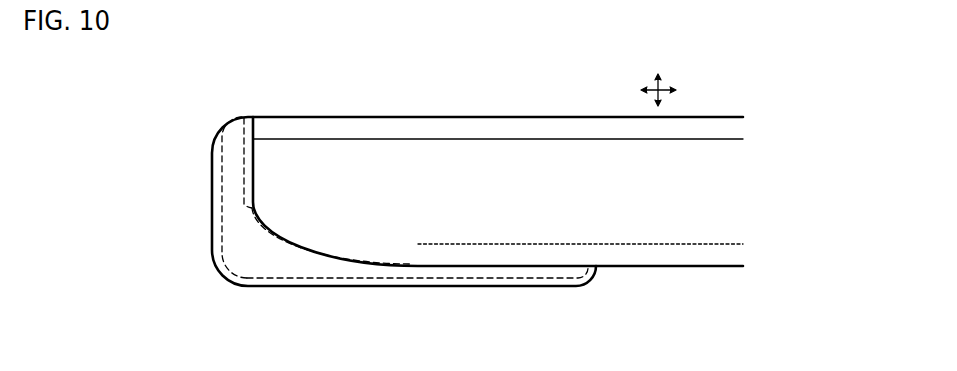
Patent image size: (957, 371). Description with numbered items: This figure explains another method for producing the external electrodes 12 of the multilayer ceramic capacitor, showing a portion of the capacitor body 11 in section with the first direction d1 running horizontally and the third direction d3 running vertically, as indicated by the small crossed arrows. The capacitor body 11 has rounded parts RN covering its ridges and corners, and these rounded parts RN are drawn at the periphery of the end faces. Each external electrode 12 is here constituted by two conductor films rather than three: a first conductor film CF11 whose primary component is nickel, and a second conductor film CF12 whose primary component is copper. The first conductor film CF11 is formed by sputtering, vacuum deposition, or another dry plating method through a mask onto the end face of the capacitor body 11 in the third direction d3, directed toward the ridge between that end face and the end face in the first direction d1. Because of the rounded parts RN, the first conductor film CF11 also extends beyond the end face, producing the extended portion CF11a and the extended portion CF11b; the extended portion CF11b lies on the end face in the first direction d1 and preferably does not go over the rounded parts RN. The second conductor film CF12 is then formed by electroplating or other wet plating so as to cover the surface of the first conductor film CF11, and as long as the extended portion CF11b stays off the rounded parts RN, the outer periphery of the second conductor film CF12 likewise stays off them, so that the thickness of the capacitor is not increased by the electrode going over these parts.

The capacitor body 11 is at (497, 117).
The external electrode 12 is at (223, 278).
The rounded parts RN is at (211, 130).
The first conductor film CF11 is at (452, 280).
The extended portion CF11a is at (316, 244).
The extended portion CF11b is at (245, 148).
The second conductor film CF12 is at (212, 212).
The first direction d1 is at (671, 91).
The third direction d3 is at (657, 78).